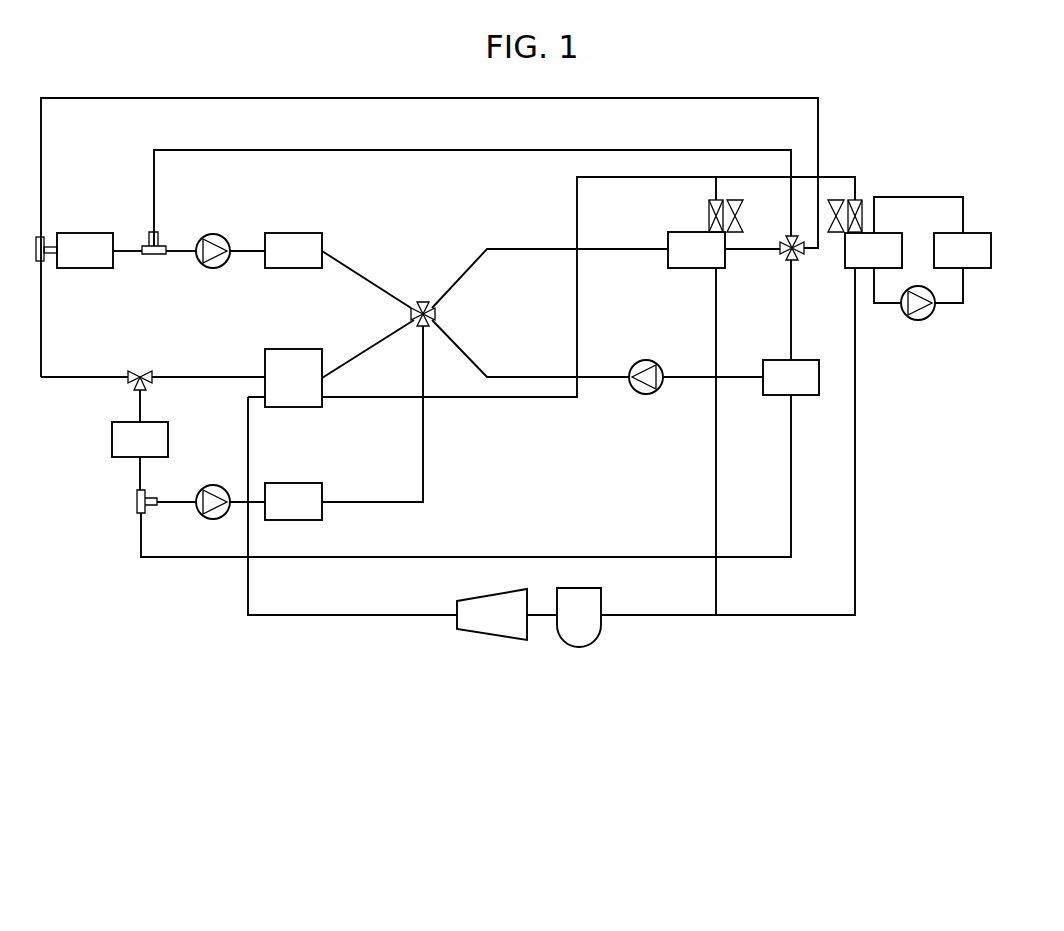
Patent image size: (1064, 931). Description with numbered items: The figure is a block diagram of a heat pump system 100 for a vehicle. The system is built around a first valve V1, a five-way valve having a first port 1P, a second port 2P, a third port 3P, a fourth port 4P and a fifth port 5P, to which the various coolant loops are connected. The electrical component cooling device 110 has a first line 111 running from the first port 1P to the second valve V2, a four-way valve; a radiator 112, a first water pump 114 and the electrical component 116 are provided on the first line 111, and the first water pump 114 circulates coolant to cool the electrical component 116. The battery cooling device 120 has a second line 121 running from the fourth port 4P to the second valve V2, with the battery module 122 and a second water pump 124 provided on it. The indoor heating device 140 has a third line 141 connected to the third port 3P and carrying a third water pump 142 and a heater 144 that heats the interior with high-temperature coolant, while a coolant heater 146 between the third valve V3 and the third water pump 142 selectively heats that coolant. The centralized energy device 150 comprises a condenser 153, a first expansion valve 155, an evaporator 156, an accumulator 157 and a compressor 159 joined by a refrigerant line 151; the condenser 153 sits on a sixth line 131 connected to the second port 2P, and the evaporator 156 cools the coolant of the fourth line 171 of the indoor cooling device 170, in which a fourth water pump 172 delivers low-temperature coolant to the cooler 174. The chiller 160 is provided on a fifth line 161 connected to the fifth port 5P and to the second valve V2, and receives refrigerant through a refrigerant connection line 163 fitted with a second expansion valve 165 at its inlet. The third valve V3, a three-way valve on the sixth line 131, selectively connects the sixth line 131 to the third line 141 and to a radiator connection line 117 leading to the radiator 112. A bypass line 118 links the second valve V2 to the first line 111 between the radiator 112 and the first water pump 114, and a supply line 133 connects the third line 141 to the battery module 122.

The heat pump system 100 is at (518, 87).
The electrical component cooling device 110 is at (243, 232).
The first line 111 is at (389, 98).
The radiator 112 is at (85, 233).
The first water pump 114 is at (213, 268).
The electrical component 116 is at (292, 233).
The radiator connection line 117 is at (41, 320).
The bypass line 118 is at (478, 150).
The battery cooling device 120 is at (678, 392).
The second line 121 is at (607, 377).
The battery module 122 is at (812, 395).
The second water pump 124 is at (648, 394).
The sixth line 131 is at (208, 377).
The supply line 133 is at (482, 557).
The indoor heating device 140 is at (192, 452).
The third line 141 is at (140, 473).
The third water pump 142 is at (213, 485).
The heater 144 is at (322, 515).
The coolant heater 146 is at (112, 440).
The centralized energy device 150 is at (872, 541).
The refrigerant line 151 is at (577, 197).
The condenser 153 is at (293, 349).
The first expansion valve 155 is at (861, 200).
The evaporator 156 is at (850, 268).
The accumulator 157 is at (600, 640).
The compressor 159 is at (493, 632).
The chiller 160 is at (685, 268).
The fifth line 161 is at (512, 249).
The refrigerant connection line 163 is at (716, 488).
The second expansion valve 165 is at (709, 209).
The indoor cooling device 170 is at (969, 186).
The fourth line 171 is at (937, 197).
The fourth water pump 172 is at (918, 320).
The cooler 174 is at (991, 250).
The first valve V1 is at (419, 296).
The second valve V2 is at (786, 240).
The third valve V3 is at (138, 371).
The first port 1P is at (411, 312).
The second port 2P is at (414, 322).
The third port 3P is at (426, 328).
The fourth port 4P is at (437, 314).
The fifth port 5P is at (432, 302).